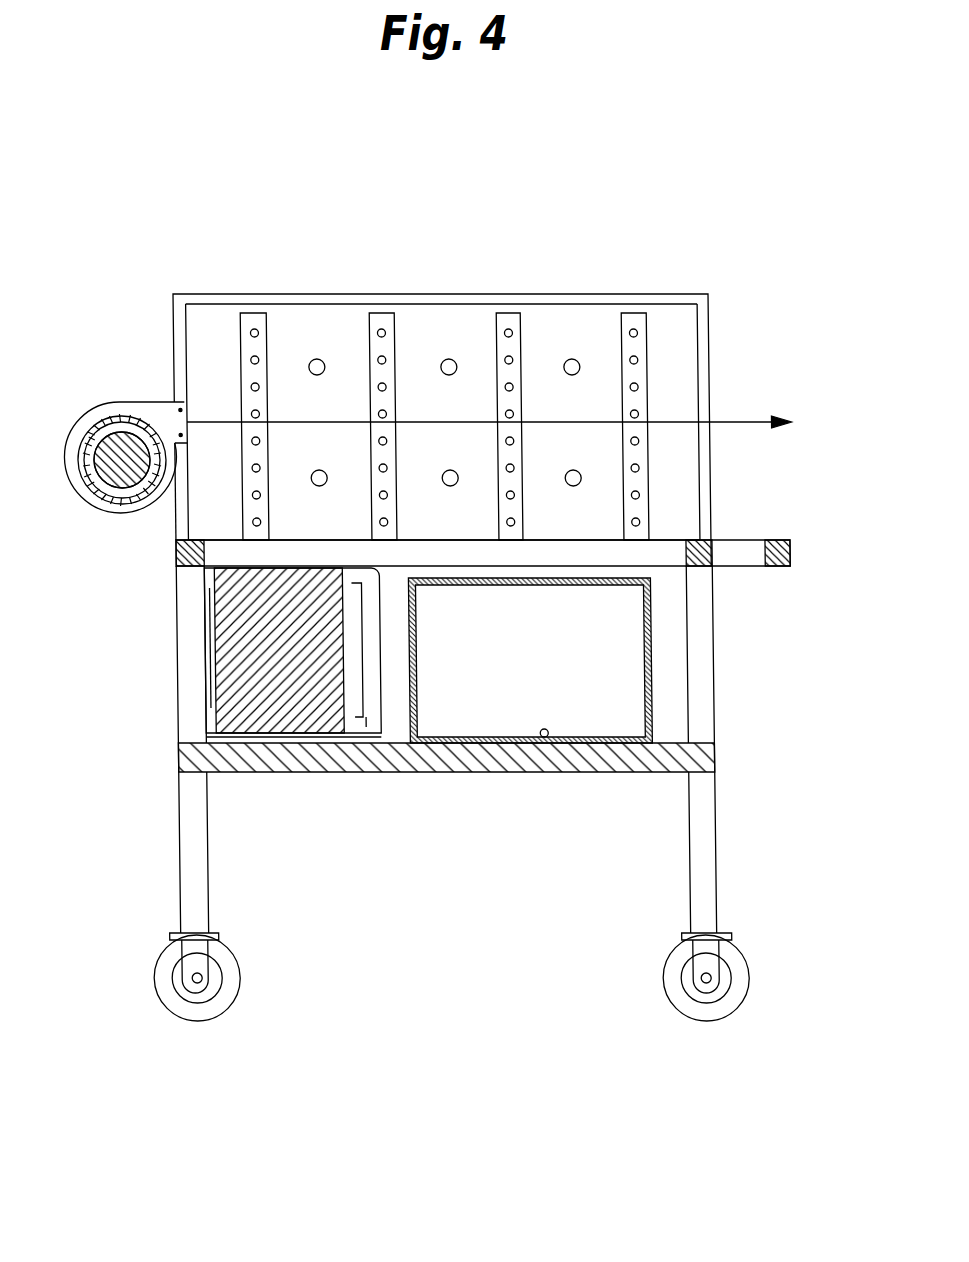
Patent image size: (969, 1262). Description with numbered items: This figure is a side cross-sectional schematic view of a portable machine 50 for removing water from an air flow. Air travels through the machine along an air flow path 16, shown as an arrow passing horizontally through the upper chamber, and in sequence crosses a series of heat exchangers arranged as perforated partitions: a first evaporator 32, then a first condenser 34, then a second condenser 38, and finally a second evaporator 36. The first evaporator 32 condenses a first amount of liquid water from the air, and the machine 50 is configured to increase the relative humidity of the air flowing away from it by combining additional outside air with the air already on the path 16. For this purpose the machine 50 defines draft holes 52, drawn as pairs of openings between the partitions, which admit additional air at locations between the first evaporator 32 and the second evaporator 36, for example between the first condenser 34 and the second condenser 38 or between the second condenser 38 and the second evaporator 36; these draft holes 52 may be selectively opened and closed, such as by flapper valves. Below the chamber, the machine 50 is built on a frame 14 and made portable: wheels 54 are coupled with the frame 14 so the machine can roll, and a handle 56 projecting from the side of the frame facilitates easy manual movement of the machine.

The frame 14 is at (173, 711).
The air flow path 16 is at (742, 422).
The first evaporator 32 is at (254, 313).
The first condenser 34 is at (381, 313).
The second evaporator 36 is at (638, 313).
The second condenser 38 is at (510, 313).
The machine 50 is at (139, 228).
The draft holes 52 is at (317, 470).
The wheels 54 is at (225, 960).
The handle 56 is at (776, 540).